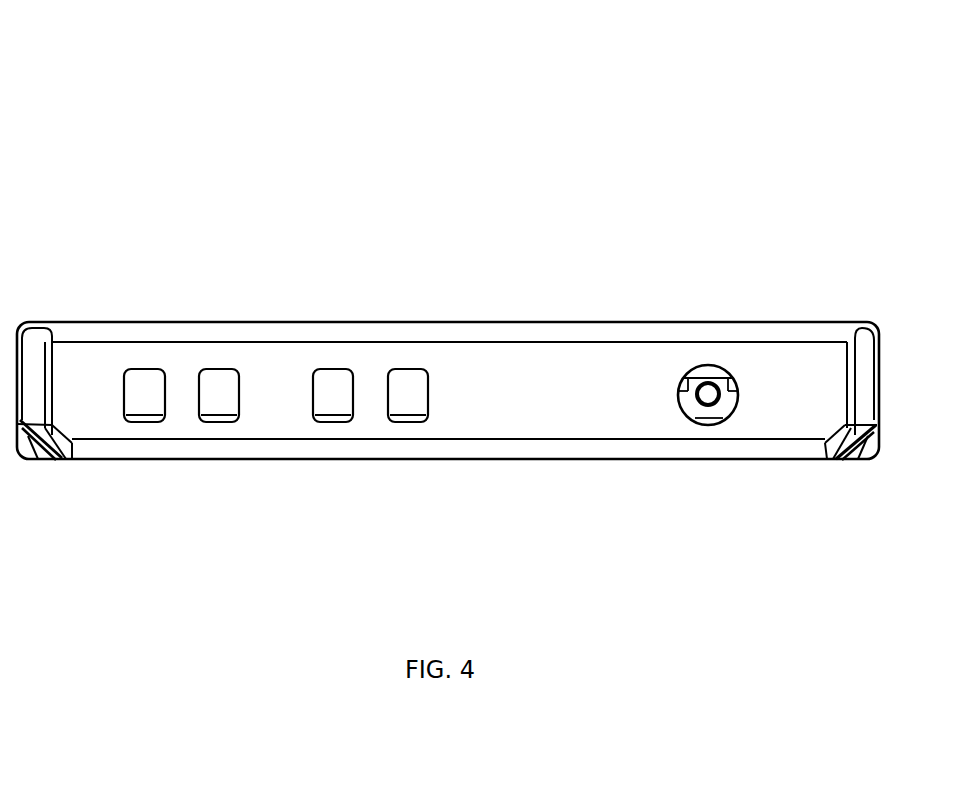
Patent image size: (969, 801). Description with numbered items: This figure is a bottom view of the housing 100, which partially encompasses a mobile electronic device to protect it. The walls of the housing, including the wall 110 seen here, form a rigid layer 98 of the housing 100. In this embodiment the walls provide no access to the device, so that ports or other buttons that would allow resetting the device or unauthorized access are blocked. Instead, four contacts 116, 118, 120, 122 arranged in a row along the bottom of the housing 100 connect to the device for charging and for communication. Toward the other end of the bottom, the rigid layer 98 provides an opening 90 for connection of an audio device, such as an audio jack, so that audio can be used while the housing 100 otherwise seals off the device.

The opening 90 is at (702, 365).
The rigid layer 98 is at (481, 365).
The housing 100 is at (776, 398).
The wall 110 is at (547, 387).
The contact 116 is at (142, 392).
The contact 118 is at (222, 385).
The contact 120 is at (333, 393).
The contact 122 is at (410, 382).